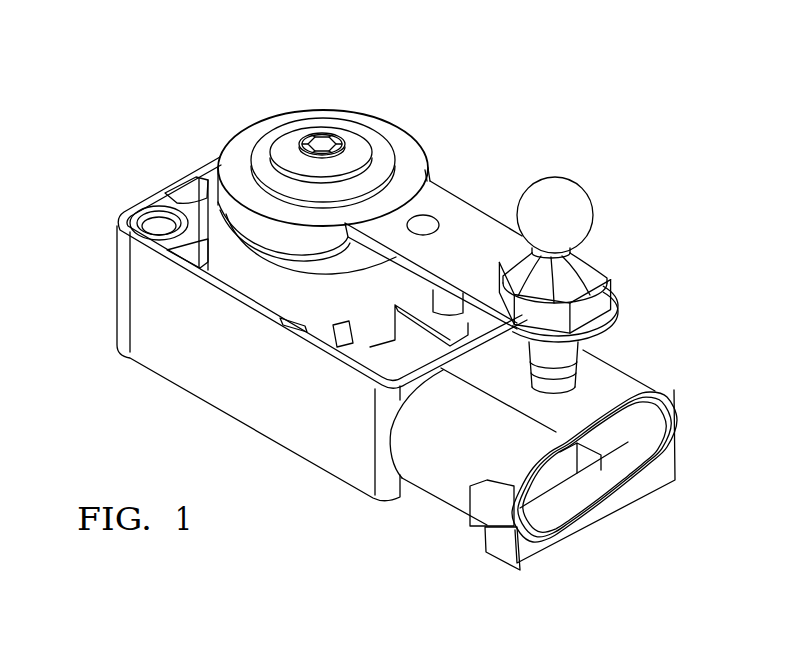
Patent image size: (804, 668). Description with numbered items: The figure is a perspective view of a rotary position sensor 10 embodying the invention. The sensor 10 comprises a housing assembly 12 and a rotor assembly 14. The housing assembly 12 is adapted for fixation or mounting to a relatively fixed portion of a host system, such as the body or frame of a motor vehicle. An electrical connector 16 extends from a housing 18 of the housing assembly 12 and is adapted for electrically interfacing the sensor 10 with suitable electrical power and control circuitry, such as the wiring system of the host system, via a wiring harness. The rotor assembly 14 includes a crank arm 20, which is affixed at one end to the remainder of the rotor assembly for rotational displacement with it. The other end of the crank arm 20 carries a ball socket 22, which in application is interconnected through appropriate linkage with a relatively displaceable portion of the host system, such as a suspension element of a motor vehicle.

The rotary position sensor 10 is at (122, 134).
The housing assembly 12 is at (116, 351).
The rotor assembly 14 is at (266, 110).
The electrical connector 16 is at (446, 486).
The housing 18 is at (287, 406).
The crank arm 20 is at (432, 197).
The ball socket 22 is at (577, 187).